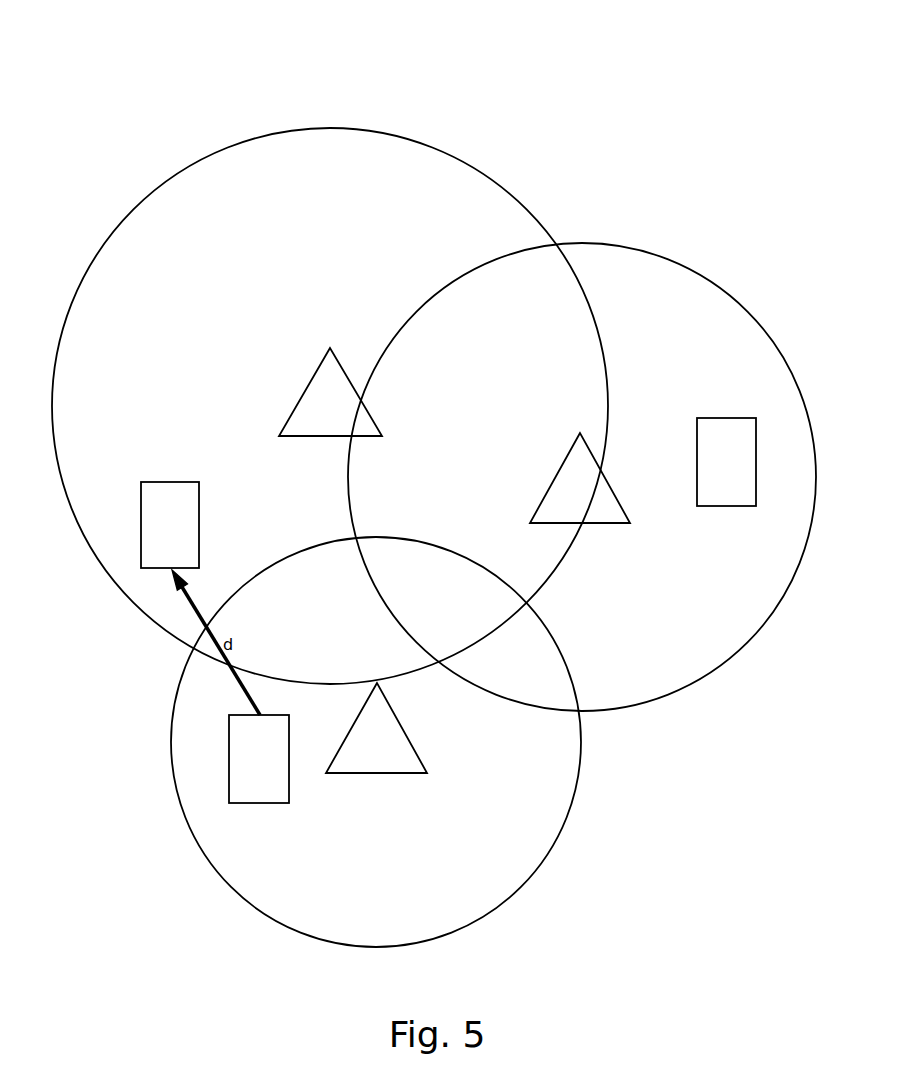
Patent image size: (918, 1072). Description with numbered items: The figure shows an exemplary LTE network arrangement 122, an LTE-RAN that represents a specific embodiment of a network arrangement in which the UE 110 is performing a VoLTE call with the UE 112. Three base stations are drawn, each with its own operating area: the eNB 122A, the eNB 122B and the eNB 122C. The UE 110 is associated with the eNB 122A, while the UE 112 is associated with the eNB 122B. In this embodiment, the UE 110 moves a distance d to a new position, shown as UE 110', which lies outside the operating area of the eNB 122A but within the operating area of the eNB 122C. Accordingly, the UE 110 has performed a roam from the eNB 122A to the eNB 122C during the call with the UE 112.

The LTE network arrangement 122 is at (678, 35).
The eNB 122A is at (377, 680).
The eNB 122B is at (580, 428).
The eNB 122C is at (330, 333).
The UE 110 is at (259, 793).
The UE position 110' is at (170, 491).
The UE 112 is at (726, 413).